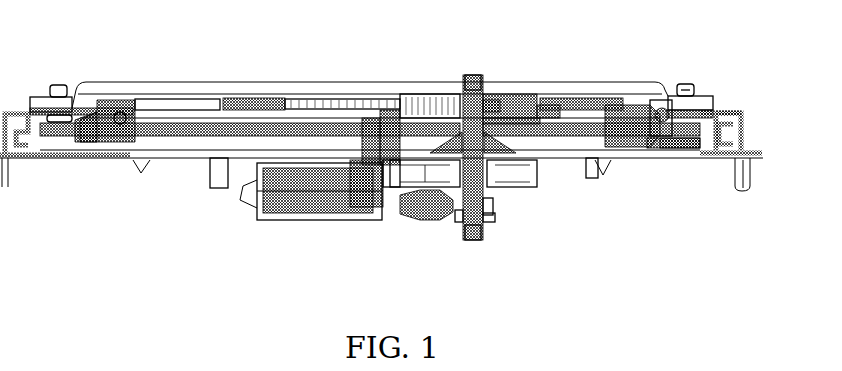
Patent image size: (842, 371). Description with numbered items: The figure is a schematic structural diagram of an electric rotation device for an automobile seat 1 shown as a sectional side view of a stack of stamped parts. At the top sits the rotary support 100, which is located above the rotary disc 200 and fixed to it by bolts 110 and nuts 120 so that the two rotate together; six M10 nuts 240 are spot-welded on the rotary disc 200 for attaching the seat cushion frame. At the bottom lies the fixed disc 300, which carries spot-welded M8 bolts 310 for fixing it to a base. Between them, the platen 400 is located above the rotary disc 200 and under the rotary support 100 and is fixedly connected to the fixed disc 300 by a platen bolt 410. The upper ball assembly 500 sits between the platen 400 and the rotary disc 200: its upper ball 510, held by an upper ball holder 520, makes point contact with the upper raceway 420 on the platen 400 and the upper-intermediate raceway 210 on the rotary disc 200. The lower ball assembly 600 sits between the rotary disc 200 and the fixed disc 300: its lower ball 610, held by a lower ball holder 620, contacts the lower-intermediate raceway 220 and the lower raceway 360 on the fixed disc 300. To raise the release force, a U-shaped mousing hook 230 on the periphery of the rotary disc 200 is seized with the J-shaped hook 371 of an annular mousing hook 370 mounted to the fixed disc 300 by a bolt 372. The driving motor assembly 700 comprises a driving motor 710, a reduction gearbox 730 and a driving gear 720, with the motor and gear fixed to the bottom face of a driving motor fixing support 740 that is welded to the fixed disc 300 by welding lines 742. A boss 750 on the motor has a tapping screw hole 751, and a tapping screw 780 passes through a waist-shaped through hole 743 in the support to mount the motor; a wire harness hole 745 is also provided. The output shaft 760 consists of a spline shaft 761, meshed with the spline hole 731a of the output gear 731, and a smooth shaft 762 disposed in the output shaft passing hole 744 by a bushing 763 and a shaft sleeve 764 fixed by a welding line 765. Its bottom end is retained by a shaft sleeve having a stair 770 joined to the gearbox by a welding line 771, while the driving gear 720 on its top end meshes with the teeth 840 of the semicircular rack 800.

The display device 1 is at (460, 120).
The rotary support 100 is at (202, 93).
The bolt 110 is at (695, 83).
The nut 120 is at (713, 98).
The rotary disc 200 is at (74, 108).
The upper-intermediate raceway 210 is at (650, 103).
The lower-intermediate raceway 220 is at (625, 107).
The U-shaped mousing hook 230 is at (735, 135).
The M10 nut 240 is at (59, 118).
The fixed disc 300 is at (50, 140).
The M8 bolt 310 is at (753, 177).
The lower raceway 360 is at (648, 145).
The annular mousing hook 370 is at (743, 127).
The J-shaped hook 371 is at (741, 112).
The bolt 372 is at (753, 152).
The platen 400 is at (80, 110).
The platen bolt 410 is at (188, 140).
The upper raceway 420 is at (622, 128).
The upper ball assembly 500 is at (93, 110).
The upper ball 510 is at (633, 110).
The upper ball holder 520 is at (617, 120).
The lower ball assembly 600 is at (100, 140).
The lower ball 610 is at (637, 147).
The lower ball holder 620 is at (672, 148).
The driving motor assembly 700 is at (266, 243).
The driving motor 710 is at (322, 200).
The driving gear 720 is at (487, 100).
The reduction gearbox 730 is at (440, 211).
The output gear 731 is at (500, 195).
The spline hole 731a is at (487, 210).
The driving motor fixing support 740 is at (407, 127).
The welding line 742 is at (597, 132).
The waist-shaped through hole 743 is at (355, 120).
The output shaft passing hole 744 is at (505, 115).
The wire harness hole 745 is at (240, 137).
The boss 750 is at (398, 210).
The tapping screw hole 751 is at (392, 128).
The output shaft 760 is at (472, 78).
The spline shaft 761 is at (483, 235).
The smooth shaft 762 is at (462, 113).
The bushing 763 is at (492, 105).
The shaft sleeve 764 is at (548, 112).
The welding line 765 is at (520, 165).
The shaft sleeve having a stair 770 is at (486, 220).
The welding line 771 is at (463, 215).
The tapping screw 780 is at (373, 120).
The semicircular rack 800 is at (253, 97).
The teeth 840 is at (307, 100).